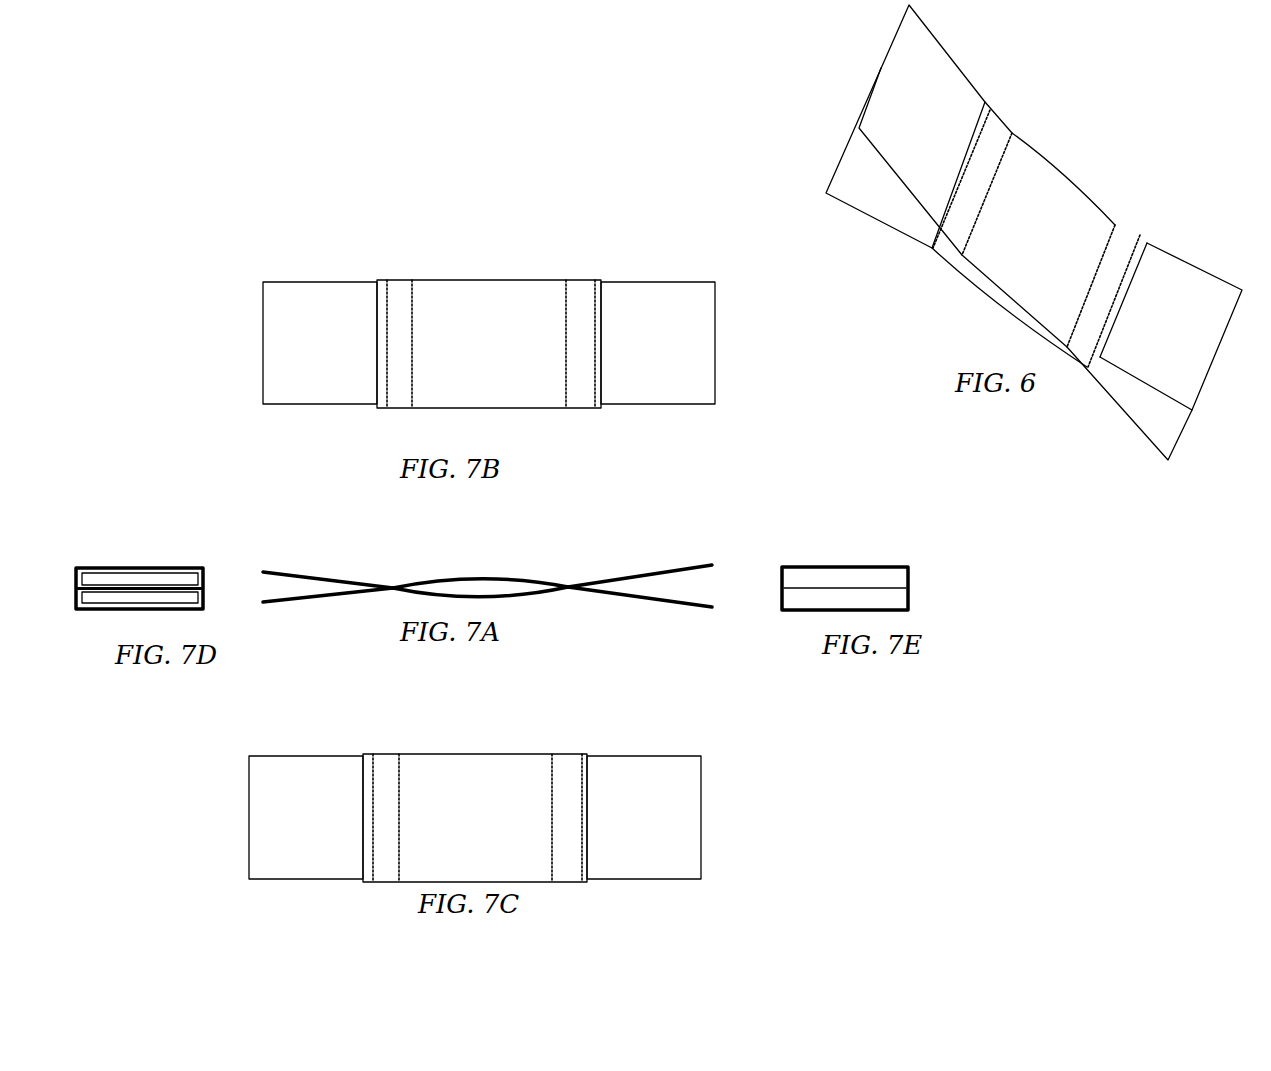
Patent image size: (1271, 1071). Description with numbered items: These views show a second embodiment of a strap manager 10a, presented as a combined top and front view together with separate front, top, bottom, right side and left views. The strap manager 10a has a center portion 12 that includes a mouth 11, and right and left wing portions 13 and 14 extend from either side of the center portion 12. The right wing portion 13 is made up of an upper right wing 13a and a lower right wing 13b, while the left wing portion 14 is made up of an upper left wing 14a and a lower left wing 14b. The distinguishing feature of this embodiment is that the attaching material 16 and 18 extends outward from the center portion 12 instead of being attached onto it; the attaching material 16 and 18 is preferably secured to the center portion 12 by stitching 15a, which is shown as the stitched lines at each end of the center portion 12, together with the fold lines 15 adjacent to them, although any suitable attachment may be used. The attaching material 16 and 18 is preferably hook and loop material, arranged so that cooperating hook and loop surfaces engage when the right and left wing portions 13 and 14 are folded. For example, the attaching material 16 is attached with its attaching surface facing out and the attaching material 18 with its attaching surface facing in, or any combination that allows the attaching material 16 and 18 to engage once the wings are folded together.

In FIG. 6, the strap manager 10a is at (1050, 107).
In FIG. 7B, the strap manager 10a is at (595, 172).
In FIG. 7C, the strap manager 10a is at (465, 742).
In FIG. 7A, the strap manager 10a is at (537, 538).
In FIG. 7D, the strap manager 10a is at (175, 538).
In FIG. 7E, the strap manager 10a is at (865, 540).
In FIG. 6, the mouth 11 is at (982, 263).
In FIG. 7A, the mouth 11 is at (482, 587).
In FIG. 7B, the center portion 12 is at (563, 262).
In FIG. 7C, the center portion 12 is at (525, 753).
In FIG. 7B, the right wing portion 13 is at (403, 262).
In FIG. 6, the upper right wing 13a is at (912, 10).
In FIG. 7A, the upper right wing 13a is at (362, 572).
In FIG. 6, the lower right wing 13b is at (927, 240).
In FIG. 7A, the lower right wing 13b is at (363, 602).
In FIG. 7B, the left wing portion 14 is at (717, 262).
In FIG. 6, the upper left wing 14a is at (1197, 250).
In FIG. 7A, the upper left wing 14a is at (595, 577).
In FIG. 6, the lower left wing 14b is at (1037, 323).
In FIG. 7A, the lower left wing 14b is at (595, 602).
In FIG. 7B, the inner fold line 15 is at (412, 337).
In FIG. 7C, the inner fold line 15 is at (399, 812).
In FIG. 7B, the stitching 15a is at (387, 337).
In FIG. 7C, the stitching 15a is at (375, 812).
In FIG. 6, the attaching material 16 is at (1150, 327).
In FIG. 7B, the attaching material 16 is at (665, 332).
In FIG. 7C, the attaching material 16 is at (652, 807).
In FIG. 7A, the attaching material 16 is at (672, 570).
In FIG. 7E, the attaching material 16 is at (820, 567).
In FIG. 6, the attaching material 18 is at (868, 194).
In FIG. 7B, the attaching material 18 is at (282, 410).
In FIG. 7C, the attaching material 18 is at (280, 754).
In FIG. 7A, the attaching material 18 is at (293, 585).
In FIG. 7D, the attaching material 18 is at (113, 583).